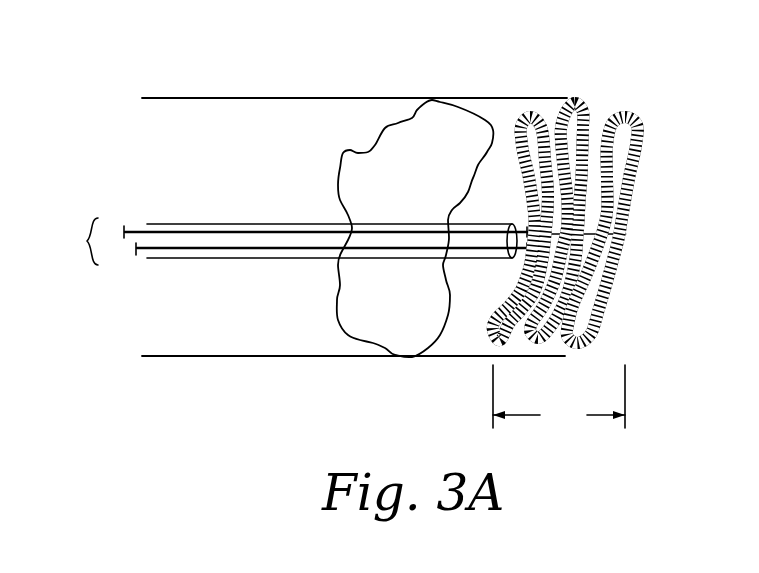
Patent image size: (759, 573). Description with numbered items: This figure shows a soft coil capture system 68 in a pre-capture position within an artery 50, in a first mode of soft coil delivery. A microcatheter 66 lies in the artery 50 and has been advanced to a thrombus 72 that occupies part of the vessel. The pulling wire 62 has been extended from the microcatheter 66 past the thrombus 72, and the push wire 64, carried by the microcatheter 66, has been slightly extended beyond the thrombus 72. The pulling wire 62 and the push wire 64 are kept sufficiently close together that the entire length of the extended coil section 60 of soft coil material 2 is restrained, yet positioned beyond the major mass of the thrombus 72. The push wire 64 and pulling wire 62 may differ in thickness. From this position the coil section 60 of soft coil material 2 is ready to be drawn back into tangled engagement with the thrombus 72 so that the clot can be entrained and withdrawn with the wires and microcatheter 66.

The soft coil material 2 is at (591, 99).
The artery 50 is at (262, 98).
The coil section 60 is at (559, 398).
The pulling wire 62 is at (140, 228).
The push wire 64 is at (143, 258).
The microcatheter 66 is at (278, 223).
The system 68 is at (72, 241).
The thrombus 72 is at (438, 113).